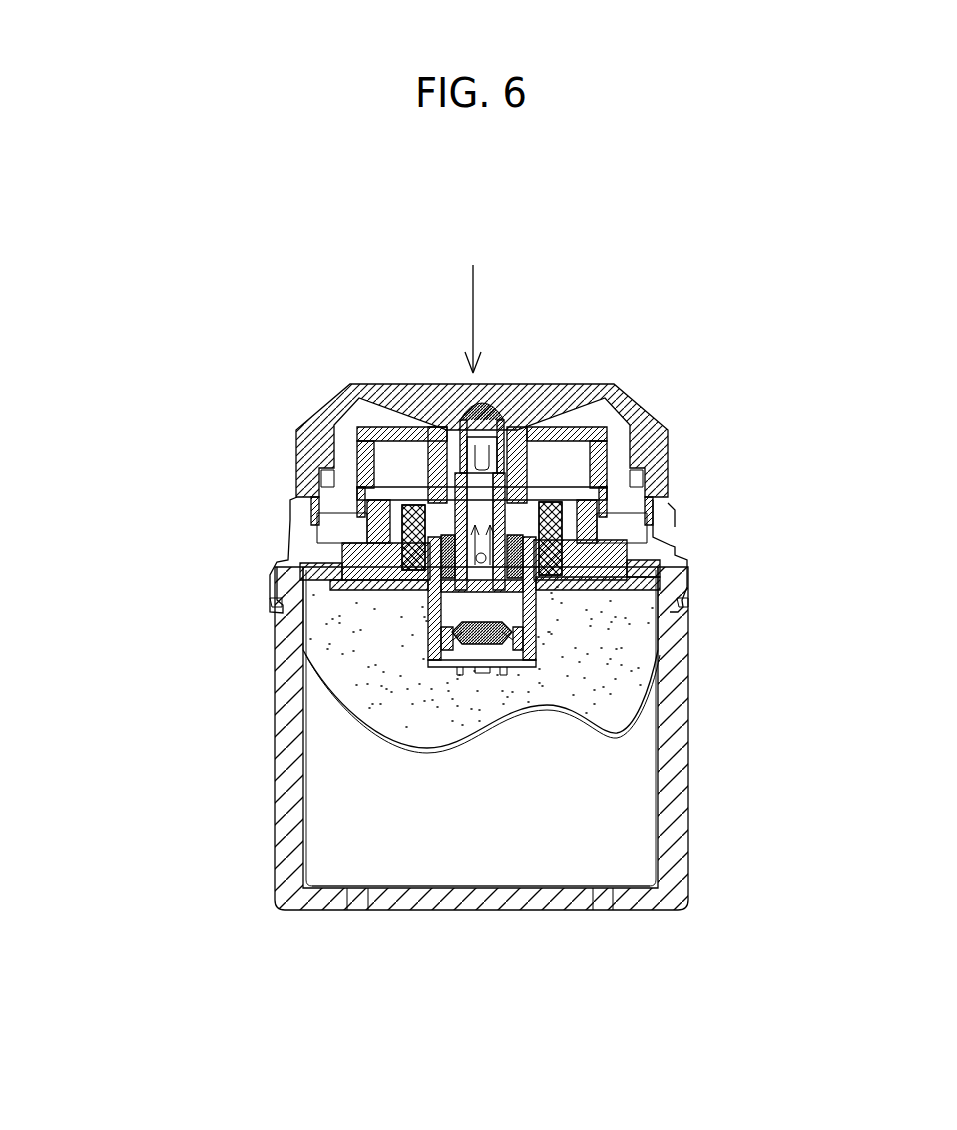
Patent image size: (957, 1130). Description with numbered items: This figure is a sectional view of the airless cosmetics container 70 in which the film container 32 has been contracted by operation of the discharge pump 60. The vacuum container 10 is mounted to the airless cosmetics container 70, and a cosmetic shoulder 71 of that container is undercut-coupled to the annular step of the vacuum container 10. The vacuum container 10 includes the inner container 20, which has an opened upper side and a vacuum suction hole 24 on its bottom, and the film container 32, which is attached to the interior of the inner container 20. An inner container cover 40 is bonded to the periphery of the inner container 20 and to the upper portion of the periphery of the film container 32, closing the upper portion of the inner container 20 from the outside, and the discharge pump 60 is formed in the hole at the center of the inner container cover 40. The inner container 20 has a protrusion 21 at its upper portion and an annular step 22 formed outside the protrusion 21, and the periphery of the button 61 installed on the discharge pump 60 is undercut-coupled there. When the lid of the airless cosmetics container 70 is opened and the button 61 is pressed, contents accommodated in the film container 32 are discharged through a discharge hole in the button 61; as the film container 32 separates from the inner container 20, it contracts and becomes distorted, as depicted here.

The vacuum container 10 is at (690, 700).
The inner container 20 is at (155, 633).
The protrusion 21 is at (303, 643).
The annular step 22 is at (300, 598).
The vacuum suction hole 24 is at (360, 897).
The film container 32 is at (318, 584).
The inner container cover 40 is at (300, 557).
The discharge pump 60 is at (617, 386).
The button 61 is at (656, 421).
The airless cosmetics container 70 is at (670, 463).
The cosmetic shoulder 71 is at (690, 600).